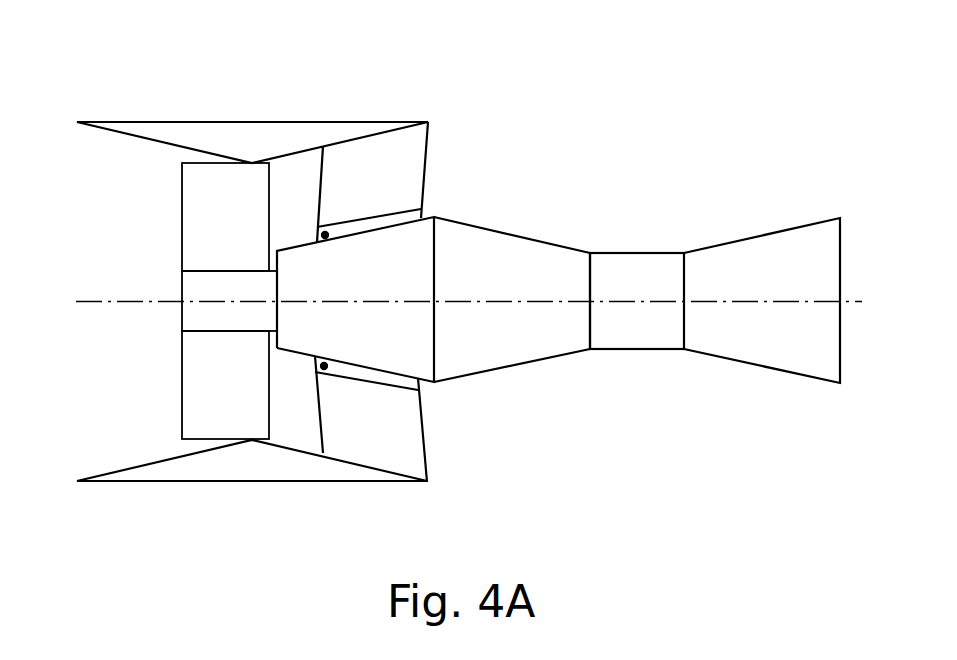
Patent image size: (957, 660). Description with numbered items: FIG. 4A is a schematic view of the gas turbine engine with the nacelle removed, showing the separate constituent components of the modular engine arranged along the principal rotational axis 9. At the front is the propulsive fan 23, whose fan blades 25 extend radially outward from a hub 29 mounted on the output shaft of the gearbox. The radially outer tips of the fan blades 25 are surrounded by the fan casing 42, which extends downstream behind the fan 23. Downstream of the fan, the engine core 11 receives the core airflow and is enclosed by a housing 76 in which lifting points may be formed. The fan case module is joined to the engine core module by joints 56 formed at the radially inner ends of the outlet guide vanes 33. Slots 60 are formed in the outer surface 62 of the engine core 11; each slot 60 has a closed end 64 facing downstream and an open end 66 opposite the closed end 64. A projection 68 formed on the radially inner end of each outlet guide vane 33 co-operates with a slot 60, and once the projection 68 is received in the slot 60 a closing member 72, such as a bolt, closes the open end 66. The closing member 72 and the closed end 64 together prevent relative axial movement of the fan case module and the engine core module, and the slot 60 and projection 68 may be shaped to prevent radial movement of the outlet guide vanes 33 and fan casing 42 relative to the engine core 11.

The principal rotational axis 9 is at (122, 303).
The engine core 11 is at (662, 268).
The propulsive fan 23 is at (195, 380).
The fan blades 25 is at (195, 217).
The hub 29 is at (195, 285).
The outlet guide vanes 33 is at (408, 165).
The fan casing 42 is at (188, 131).
The joints 56 is at (410, 213).
The slots 60 is at (371, 212).
The outer surface 62 is at (553, 243).
The closed end 64 is at (421, 216).
The open end 66 is at (313, 232).
The projection 68 is at (345, 228).
The closing member 72 is at (325, 235).
The housing 76 is at (570, 351).